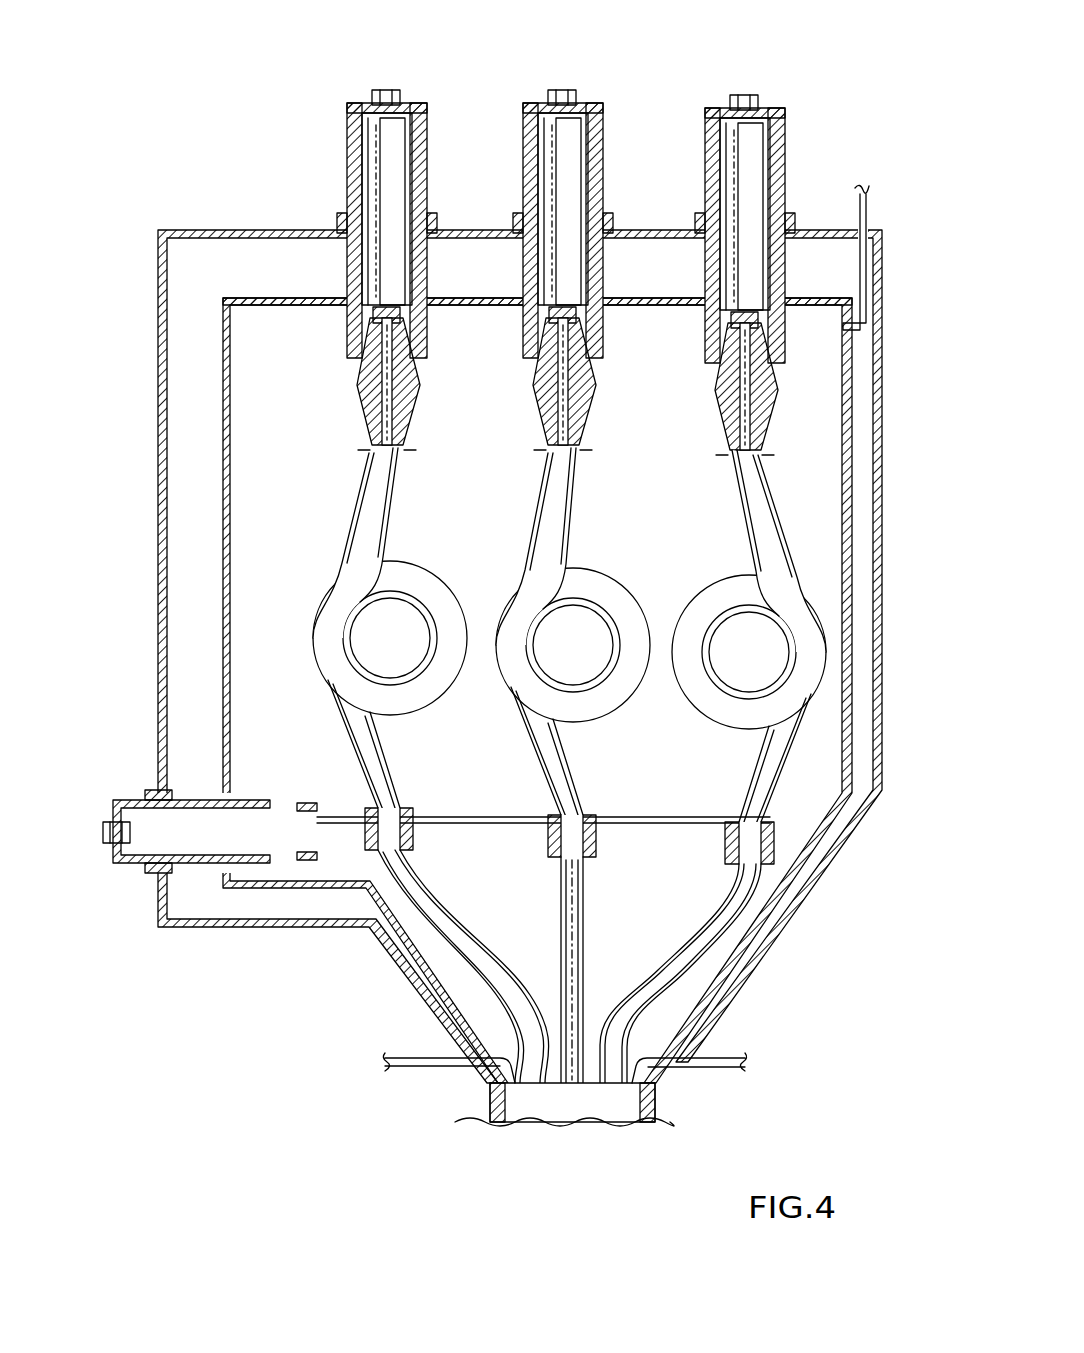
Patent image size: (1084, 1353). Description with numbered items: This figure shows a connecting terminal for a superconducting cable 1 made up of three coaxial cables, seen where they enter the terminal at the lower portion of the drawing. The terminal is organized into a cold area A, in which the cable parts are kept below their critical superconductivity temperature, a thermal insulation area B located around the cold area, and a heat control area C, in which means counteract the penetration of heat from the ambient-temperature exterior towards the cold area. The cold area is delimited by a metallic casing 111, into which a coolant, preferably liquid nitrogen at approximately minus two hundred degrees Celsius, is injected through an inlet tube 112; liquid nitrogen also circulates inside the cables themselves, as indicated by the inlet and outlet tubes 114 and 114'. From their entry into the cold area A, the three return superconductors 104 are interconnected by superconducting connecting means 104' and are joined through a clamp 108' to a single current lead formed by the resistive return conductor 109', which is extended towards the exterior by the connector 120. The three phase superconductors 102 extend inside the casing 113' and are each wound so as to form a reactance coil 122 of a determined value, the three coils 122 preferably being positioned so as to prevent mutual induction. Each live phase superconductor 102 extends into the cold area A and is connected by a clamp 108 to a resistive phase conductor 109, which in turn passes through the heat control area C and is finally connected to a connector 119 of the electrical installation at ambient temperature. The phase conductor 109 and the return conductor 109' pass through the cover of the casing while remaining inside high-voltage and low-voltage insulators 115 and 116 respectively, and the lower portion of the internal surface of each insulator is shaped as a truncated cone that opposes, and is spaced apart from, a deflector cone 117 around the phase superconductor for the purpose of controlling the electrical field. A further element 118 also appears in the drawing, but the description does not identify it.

The cable 1 is at (546, 1105).
The phase superconductor 102 is at (360, 395).
The return superconductor 104 is at (569, 945).
The superconducting connecting means 104' is at (543, 774).
The clamp 108 is at (537, 278).
The clamp 108' is at (326, 807).
The phase conductor 109 is at (517, 211).
The return conductor 109' is at (211, 799).
The casing 111 is at (876, 442).
The inlet tube 112 is at (866, 194).
The casing 113' is at (579, 690).
The inlet tube 114 is at (724, 1050).
The outlet tube 114' is at (430, 1046).
The high-voltage insulator 115 is at (422, 152).
The low-voltage insulator 116 is at (152, 800).
The deflector cone 117 is at (352, 357).
The piston 118 is at (373, 198).
The connector 119 is at (390, 90).
The connector 120 is at (108, 822).
The reactance coil 122 is at (424, 574).
The cold area A is at (828, 358).
The thermal insulation area B is at (853, 521).
The heat control area C is at (349, 135).